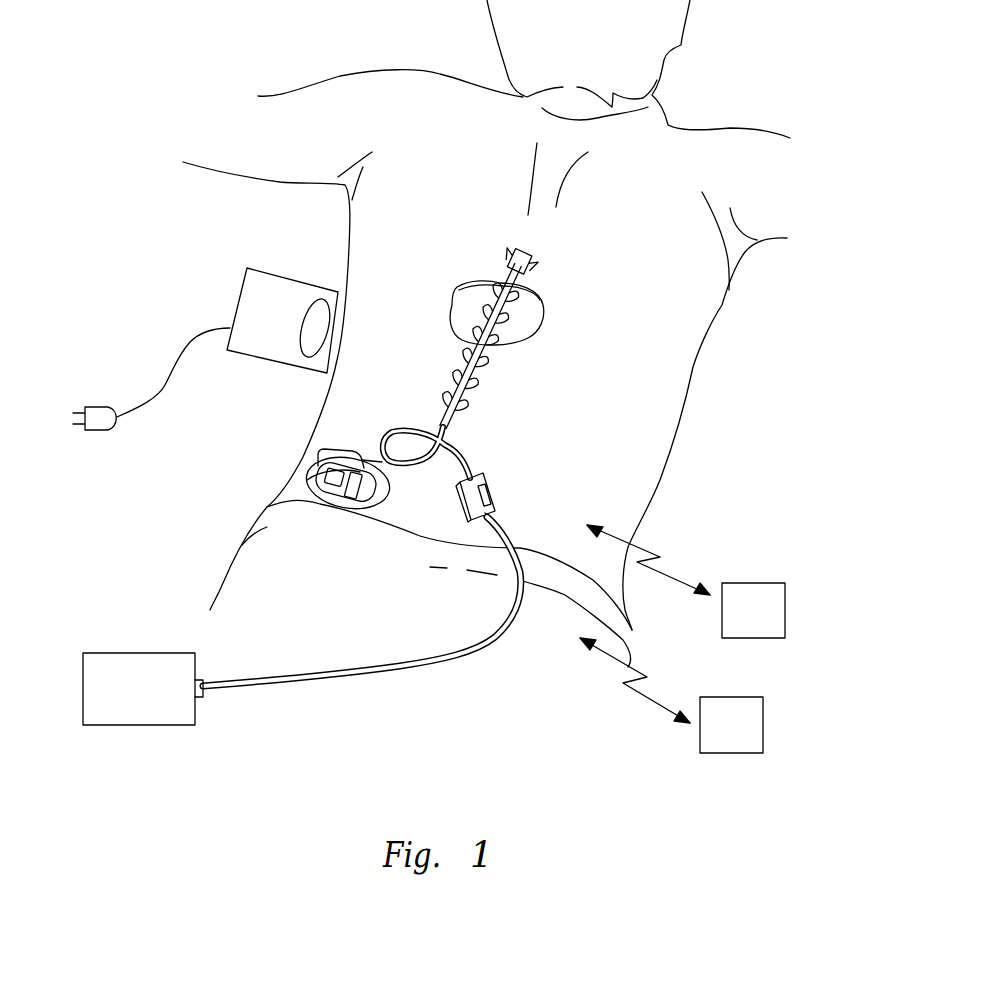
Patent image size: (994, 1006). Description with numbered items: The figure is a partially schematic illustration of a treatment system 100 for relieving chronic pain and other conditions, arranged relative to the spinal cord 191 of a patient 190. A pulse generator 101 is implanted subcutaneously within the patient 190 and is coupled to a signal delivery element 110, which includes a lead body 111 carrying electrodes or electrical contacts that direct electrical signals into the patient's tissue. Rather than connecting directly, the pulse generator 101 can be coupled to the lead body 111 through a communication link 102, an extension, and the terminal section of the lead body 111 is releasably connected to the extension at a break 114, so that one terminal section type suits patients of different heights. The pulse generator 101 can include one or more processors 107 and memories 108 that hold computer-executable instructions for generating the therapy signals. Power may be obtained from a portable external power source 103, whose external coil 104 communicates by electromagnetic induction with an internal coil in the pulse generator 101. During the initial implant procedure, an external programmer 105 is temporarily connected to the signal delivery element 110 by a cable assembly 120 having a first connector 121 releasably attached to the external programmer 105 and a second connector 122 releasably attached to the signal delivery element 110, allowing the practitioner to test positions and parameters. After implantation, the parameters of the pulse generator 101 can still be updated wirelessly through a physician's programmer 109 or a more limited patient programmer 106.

The treatment system 100 is at (232, 428).
The pulse generator 101 is at (390, 480).
The communication link 102 is at (423, 428).
The external power source 103 is at (282, 272).
The external coil 104 is at (303, 347).
The external programmer 105 is at (127, 652).
The wireless patient programmer 106 is at (757, 583).
The processor 107 is at (338, 506).
The memory 108 is at (390, 530).
The wireless physician's programmer 109 is at (733, 697).
The signal delivery element 110 is at (483, 308).
The lead body 111 is at (483, 327).
The break 114 is at (443, 410).
The cable assembly 120 is at (428, 675).
The first connector 121 is at (207, 682).
The second connector 122 is at (492, 490).
The patient 190 is at (665, 425).
The spinal cord 191 is at (497, 392).